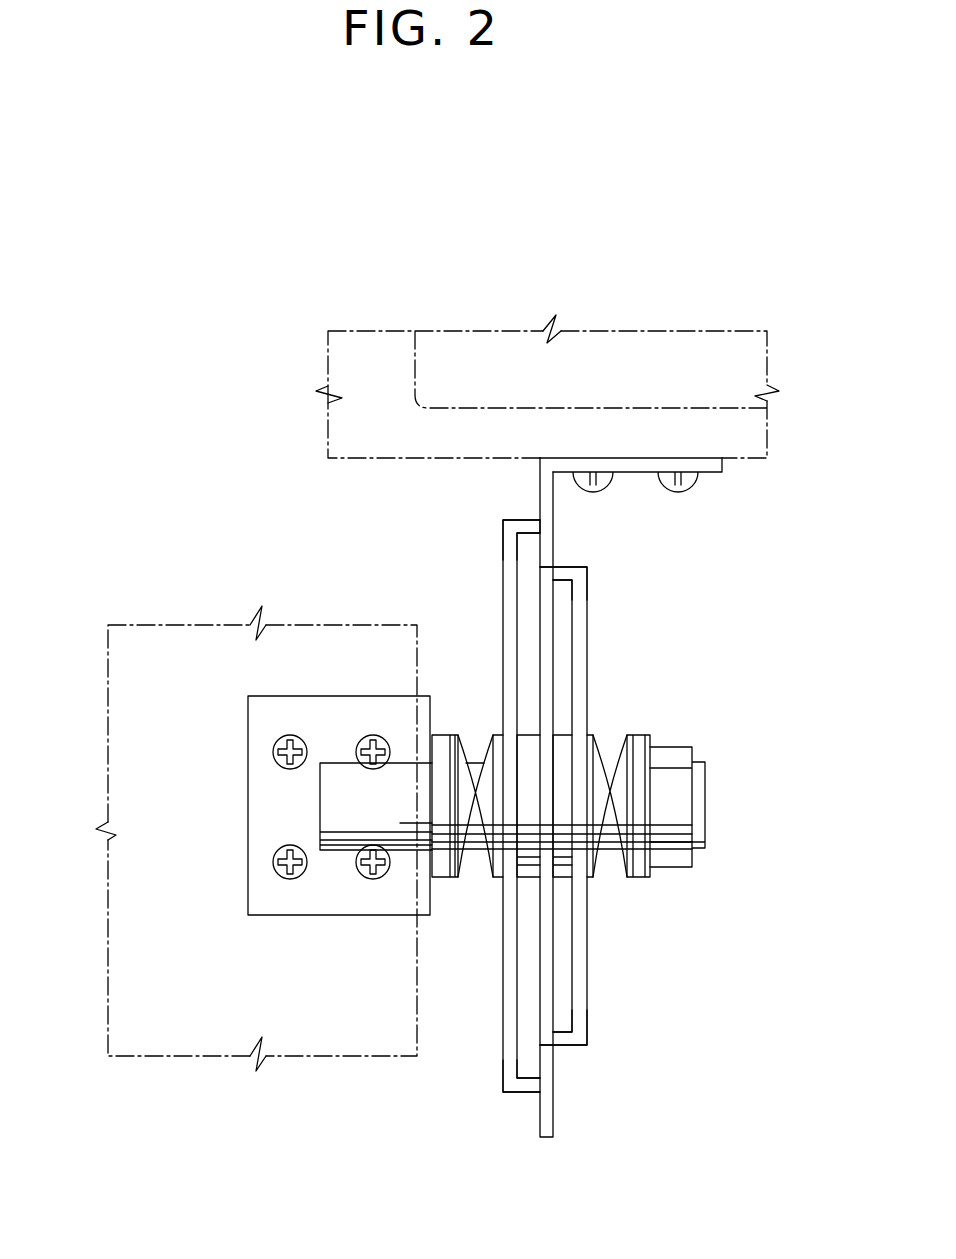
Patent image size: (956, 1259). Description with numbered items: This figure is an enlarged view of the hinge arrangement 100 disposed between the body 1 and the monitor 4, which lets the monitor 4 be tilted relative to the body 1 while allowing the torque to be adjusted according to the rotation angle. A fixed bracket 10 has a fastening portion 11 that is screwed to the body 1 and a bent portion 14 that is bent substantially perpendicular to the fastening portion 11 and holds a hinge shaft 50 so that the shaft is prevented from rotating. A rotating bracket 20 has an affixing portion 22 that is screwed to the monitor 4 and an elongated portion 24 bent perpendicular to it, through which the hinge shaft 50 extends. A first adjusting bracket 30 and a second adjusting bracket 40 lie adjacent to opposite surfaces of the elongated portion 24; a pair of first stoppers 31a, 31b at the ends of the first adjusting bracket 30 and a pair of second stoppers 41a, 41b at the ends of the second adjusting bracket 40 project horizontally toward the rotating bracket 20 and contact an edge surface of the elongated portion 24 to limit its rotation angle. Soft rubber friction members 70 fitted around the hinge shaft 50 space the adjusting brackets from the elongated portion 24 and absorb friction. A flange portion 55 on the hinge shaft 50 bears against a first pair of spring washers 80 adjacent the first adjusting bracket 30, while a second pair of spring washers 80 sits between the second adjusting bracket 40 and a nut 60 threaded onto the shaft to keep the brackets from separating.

The body 1 is at (108, 912).
The monitor 4 is at (328, 337).
The fixed bracket 10 is at (470, 769).
The fastening portion 11 is at (315, 905).
The bent portion 14 is at (420, 905).
The rotating bracket 20 is at (638, 817).
The affixing portion 22 is at (712, 474).
The elongated portion 24 is at (548, 507).
The first adjusting bracket 30 is at (469, 831).
The first stopper 31a is at (502, 524).
The first stopper 31b is at (518, 1092).
The second adjusting bracket 40 is at (605, 845).
The second stopper 41a is at (580, 575).
The second stopper 41b is at (575, 1045).
The hinge shaft 50 is at (706, 806).
The flange portion 55 is at (445, 880).
The nut 60 is at (668, 757).
The friction member 70 is at (562, 737).
The spring washer 80 is at (480, 880).
The hinge arrangement 100 is at (720, 893).